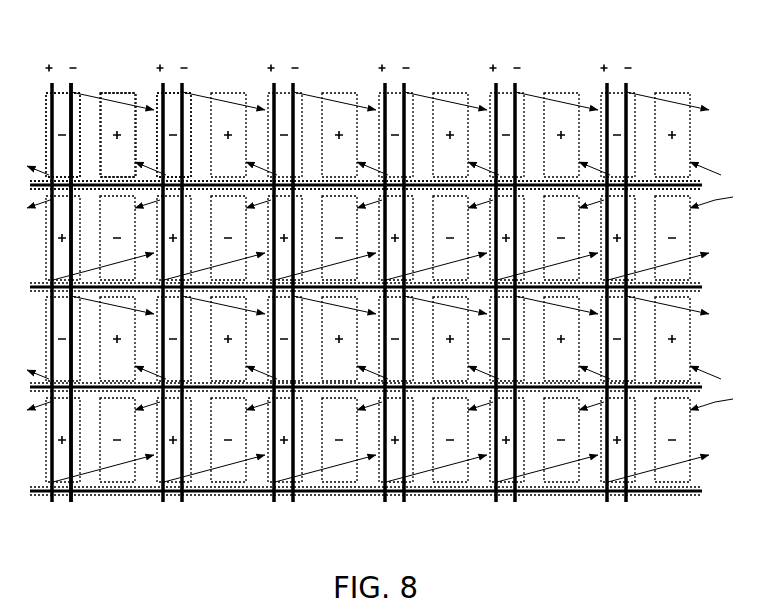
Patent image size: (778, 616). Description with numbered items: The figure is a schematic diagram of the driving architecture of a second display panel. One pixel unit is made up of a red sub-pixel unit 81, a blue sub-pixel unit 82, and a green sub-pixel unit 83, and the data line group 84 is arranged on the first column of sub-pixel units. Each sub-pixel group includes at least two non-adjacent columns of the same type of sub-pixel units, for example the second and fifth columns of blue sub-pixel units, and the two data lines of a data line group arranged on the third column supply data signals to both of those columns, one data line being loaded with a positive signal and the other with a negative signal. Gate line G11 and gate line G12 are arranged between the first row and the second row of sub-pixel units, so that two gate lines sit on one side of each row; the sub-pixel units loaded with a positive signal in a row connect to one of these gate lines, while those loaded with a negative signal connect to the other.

The red sub-pixel unit 81 is at (61, 91).
The blue sub-pixel unit 82 is at (117, 91).
The green sub-pixel unit 83 is at (173, 91).
The data line group 84 is at (70, 501).
The gate line G11 is at (702, 180).
The gate line G12 is at (702, 191).